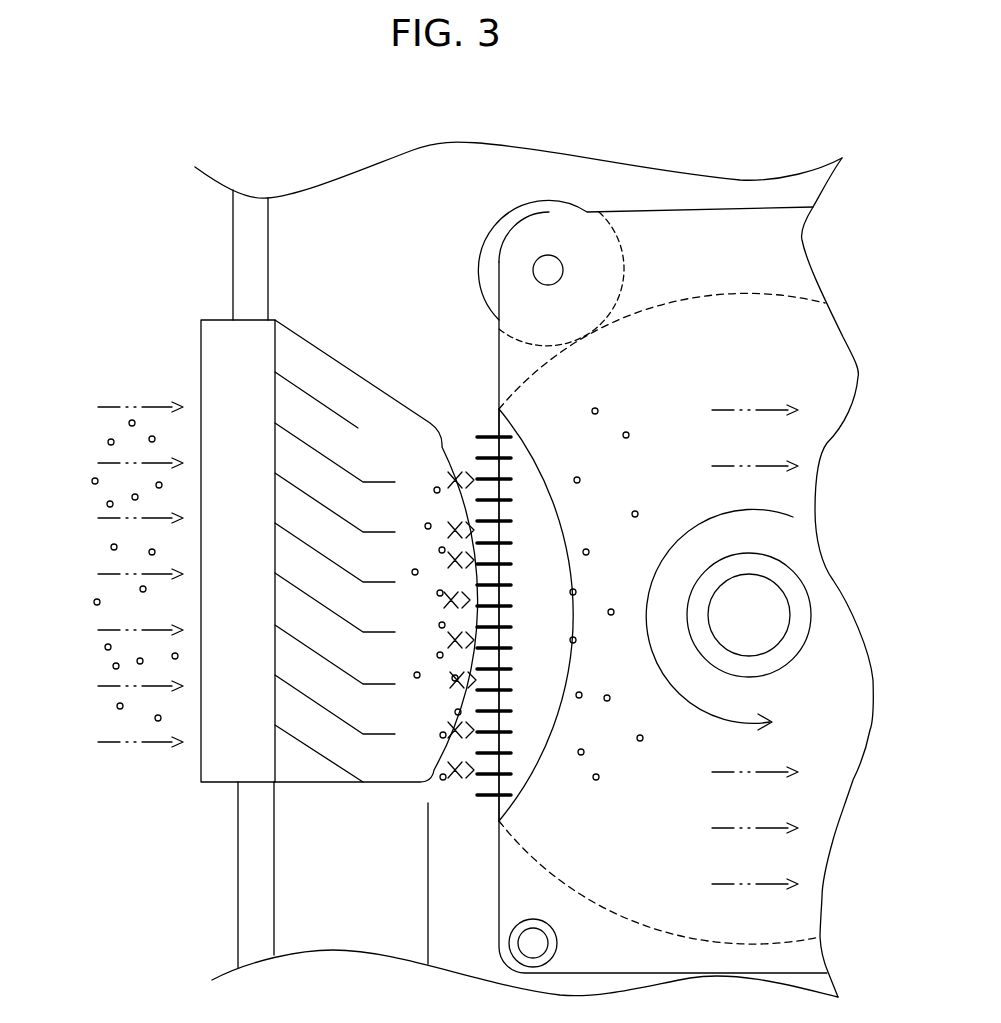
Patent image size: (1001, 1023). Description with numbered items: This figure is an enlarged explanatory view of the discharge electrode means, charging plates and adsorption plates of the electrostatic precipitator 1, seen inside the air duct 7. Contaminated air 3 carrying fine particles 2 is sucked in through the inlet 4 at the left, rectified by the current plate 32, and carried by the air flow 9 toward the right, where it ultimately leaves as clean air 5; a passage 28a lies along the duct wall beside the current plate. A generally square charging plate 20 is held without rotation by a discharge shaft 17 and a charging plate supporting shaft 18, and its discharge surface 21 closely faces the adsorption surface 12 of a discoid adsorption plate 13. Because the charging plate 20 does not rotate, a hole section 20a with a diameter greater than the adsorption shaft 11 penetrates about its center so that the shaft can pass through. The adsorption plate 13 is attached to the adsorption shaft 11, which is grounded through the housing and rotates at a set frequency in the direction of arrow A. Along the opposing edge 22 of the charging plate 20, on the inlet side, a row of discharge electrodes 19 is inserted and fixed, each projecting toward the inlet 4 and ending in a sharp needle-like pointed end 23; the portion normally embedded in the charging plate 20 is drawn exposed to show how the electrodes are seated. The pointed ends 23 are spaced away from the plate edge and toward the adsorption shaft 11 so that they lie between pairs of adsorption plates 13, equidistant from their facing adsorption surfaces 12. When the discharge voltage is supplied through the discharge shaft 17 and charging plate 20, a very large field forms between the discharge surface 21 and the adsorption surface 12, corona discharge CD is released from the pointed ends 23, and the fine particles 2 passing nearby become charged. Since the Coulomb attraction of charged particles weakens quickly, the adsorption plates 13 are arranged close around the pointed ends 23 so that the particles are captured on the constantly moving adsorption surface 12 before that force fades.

The electrostatic precipitator 1 is at (230, 115).
The fine particles 2 is at (108, 443).
The contaminated air 3 is at (124, 372).
The inlet 4 is at (220, 767).
The clean air 5 is at (757, 364).
The air duct 7 is at (366, 250).
The air flow 9 is at (712, 612).
The adsorption shaft 11 is at (782, 643).
The adsorption surface 12 is at (652, 911).
The adsorption plate 13 is at (662, 630).
The discharge shaft 17 is at (546, 270).
The charging plate supporting shaft 18 is at (535, 943).
The discharge electrode 19 is at (511, 437).
The charging plate 20 is at (645, 497).
The hole section 20a is at (744, 556).
The discharge surface 21 is at (657, 240).
The opposing edge 22 is at (499, 869).
The pointed end 23 is at (492, 797).
The air passage 28a is at (300, 579).
The current plate 32 is at (305, 390).
The corona discharge CD is at (418, 393).
The arrow A is at (698, 712).